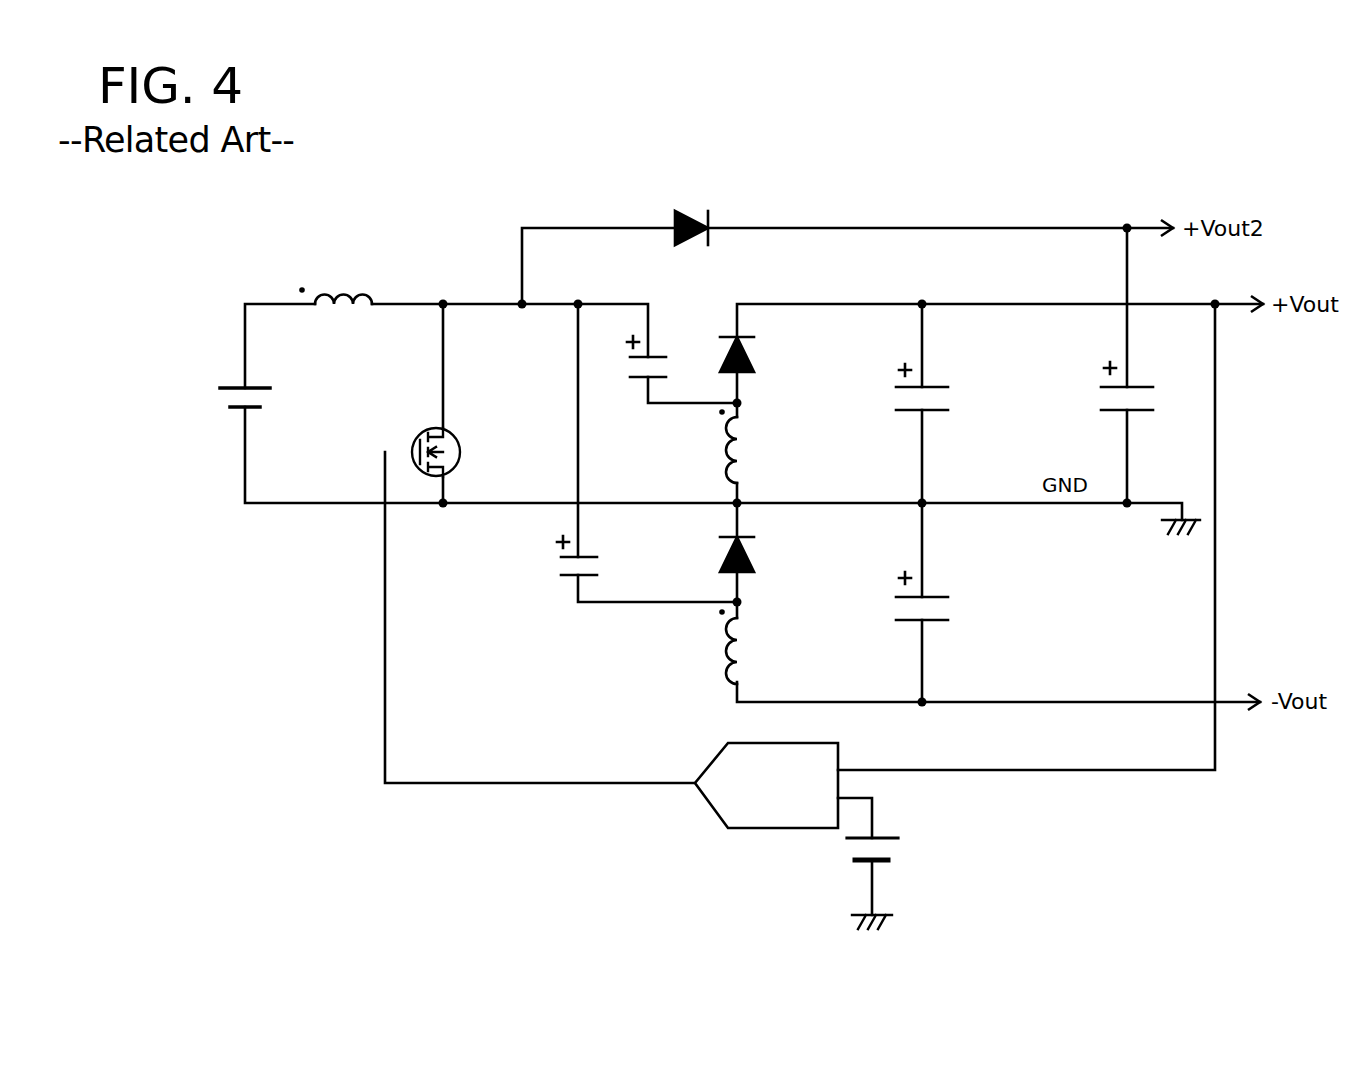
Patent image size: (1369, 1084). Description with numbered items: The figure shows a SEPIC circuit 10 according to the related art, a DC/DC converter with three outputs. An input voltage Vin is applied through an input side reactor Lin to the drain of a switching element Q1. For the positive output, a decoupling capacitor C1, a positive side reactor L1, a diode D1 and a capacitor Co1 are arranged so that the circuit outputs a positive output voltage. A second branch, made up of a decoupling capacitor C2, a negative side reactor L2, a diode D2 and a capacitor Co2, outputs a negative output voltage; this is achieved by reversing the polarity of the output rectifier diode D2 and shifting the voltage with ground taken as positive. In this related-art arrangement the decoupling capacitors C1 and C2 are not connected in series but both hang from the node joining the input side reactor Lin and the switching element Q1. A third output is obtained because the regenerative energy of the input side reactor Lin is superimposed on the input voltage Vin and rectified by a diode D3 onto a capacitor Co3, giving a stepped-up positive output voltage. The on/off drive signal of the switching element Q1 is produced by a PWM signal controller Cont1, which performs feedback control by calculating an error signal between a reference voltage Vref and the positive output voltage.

The switching power supply circuit (related art) 10 is at (821, 197).
The input side reactor Lin is at (335, 278).
The input voltage Vin is at (263, 396).
The switching element Q1 is at (455, 452).
The decoupling capacitor C1 is at (631, 358).
The decoupling capacitor C2 is at (562, 558).
The diode D1 is at (754, 354).
The diode D2 is at (754, 555).
The diode D3 is at (691, 244).
The positive side reactor L1 is at (746, 446).
The negative side reactor L2 is at (745, 646).
The capacitor Co1 is at (935, 386).
The capacitor Co2 is at (935, 611).
The capacitor Co3 is at (1139, 386).
The PWM signal controller Cont1 is at (807, 832).
The reference voltage Vref is at (891, 857).